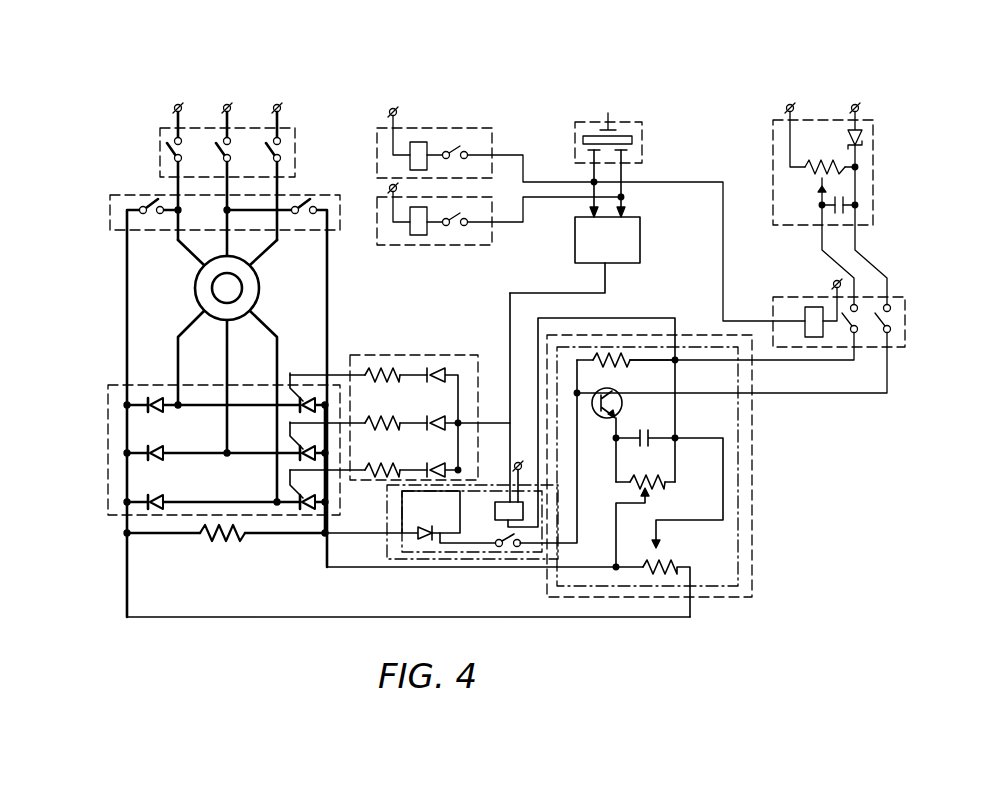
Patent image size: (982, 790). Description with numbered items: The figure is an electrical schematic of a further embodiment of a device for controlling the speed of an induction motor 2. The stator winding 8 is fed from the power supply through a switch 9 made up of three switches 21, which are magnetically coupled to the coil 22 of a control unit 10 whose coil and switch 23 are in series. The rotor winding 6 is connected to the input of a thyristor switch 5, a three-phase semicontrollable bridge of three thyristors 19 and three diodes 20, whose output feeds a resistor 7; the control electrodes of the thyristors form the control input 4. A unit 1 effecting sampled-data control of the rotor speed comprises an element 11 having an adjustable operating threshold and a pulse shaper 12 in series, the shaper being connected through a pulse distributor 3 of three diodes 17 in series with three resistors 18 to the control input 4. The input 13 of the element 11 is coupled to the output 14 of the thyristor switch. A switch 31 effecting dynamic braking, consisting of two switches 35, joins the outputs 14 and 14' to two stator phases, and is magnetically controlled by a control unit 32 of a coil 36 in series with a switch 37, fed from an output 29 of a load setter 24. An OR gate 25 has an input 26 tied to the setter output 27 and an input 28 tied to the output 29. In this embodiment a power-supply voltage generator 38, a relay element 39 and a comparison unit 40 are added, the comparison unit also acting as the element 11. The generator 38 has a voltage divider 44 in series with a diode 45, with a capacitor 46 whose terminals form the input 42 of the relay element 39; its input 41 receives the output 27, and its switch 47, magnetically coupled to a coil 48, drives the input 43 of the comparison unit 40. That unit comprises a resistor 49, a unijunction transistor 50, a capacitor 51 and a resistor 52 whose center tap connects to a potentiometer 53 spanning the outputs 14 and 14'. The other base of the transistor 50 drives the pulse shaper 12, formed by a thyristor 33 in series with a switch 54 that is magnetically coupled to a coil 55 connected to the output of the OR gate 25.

The unit effecting sampled-data control 1 is at (492, 486).
The motor 2 is at (260, 266).
The pulse distributor 3 is at (440, 316).
The control input 4 is at (288, 378).
The thyristor switch 5 is at (114, 386).
The rotor winding 6 is at (205, 288).
The resistor 7 is at (206, 540).
The stator winding 8 is at (252, 288).
The switch 9 is at (158, 164).
The control unit 10 is at (377, 150).
The element having an adjustable operating threshold 11 is at (752, 456).
The pulse shaper 12 is at (398, 544).
The input 13 is at (558, 558).
The output 14 is at (468, 552).
The output 14' is at (389, 578).
The diodes 17 is at (448, 370).
The resistors 18 is at (374, 372).
The thyristors 19 is at (308, 500).
The diodes 20 is at (156, 410).
The switches 21 is at (214, 138).
The coil 22 is at (418, 142).
The switch 23 is at (456, 146).
The load setter 24 is at (642, 124).
The OR gate 25 is at (575, 255).
The input 26 is at (590, 212).
The output 27 is at (592, 168).
The input 28 is at (628, 214).
The output 29 is at (624, 168).
The switch effecting dynamic braking 31 is at (110, 215).
The control unit 32 is at (378, 216).
The thyristor 33 is at (420, 532).
The switches 35 is at (150, 215).
The coil 36 is at (410, 232).
The switch 37 is at (462, 214).
The power-supply voltage generator 38 is at (876, 182).
The relay element 39 is at (908, 296).
The comparison unit 40 is at (752, 452).
The input 41 is at (774, 320).
The input 42 is at (880, 300).
The input 43 is at (746, 396).
The voltage divider 44 is at (834, 164).
The diode 45 is at (866, 137).
The capacitor 46 is at (830, 205).
The switch 47 is at (888, 344).
The coil 48 is at (814, 308).
The resistor 49 is at (608, 354).
The unijunction transistor 50 is at (614, 394).
The capacitor 51 is at (618, 438).
The resistor 52 is at (656, 484).
The potentiometer 53 is at (664, 564).
The switch 54 is at (508, 548).
The coil 55 is at (585, 410).